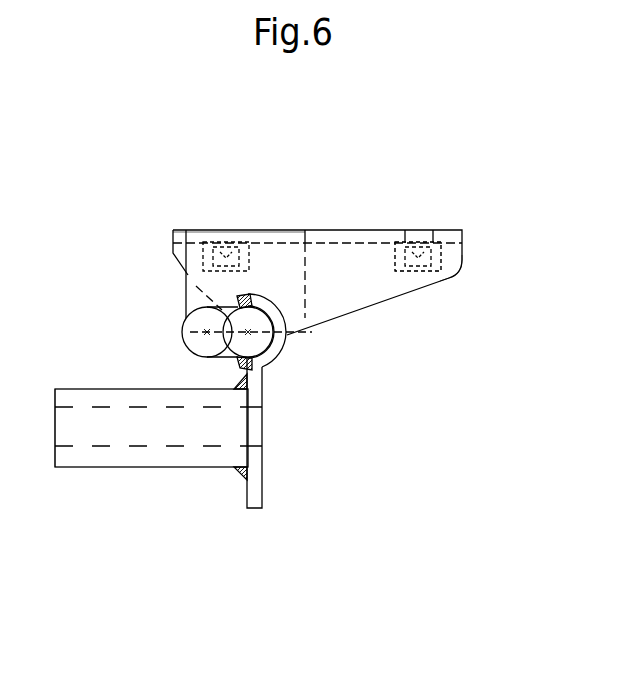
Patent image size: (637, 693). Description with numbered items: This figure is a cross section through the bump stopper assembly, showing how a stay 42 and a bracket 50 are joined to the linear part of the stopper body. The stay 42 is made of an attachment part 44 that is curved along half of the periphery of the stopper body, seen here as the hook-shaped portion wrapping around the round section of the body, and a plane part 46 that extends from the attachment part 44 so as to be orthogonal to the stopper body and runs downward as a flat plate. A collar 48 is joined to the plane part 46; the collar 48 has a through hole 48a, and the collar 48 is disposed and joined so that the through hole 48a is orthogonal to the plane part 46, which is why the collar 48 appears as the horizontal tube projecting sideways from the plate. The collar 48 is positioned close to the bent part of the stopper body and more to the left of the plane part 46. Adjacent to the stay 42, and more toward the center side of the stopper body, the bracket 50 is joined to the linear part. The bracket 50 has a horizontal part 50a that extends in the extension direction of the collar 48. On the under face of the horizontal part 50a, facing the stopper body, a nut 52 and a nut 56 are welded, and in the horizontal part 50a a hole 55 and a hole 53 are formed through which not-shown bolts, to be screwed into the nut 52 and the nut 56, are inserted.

The stay 42 is at (263, 468).
The attachment part 44 is at (298, 337).
The plane part 46 is at (255, 457).
The collar 48 is at (158, 459).
The through hole 48a is at (75, 434).
The bracket 50 is at (315, 261).
The horizontal part 50a is at (335, 231).
The nut 52 is at (203, 248).
The hole 53 is at (430, 240).
The hole 55 is at (223, 231).
The nut 56 is at (465, 262).